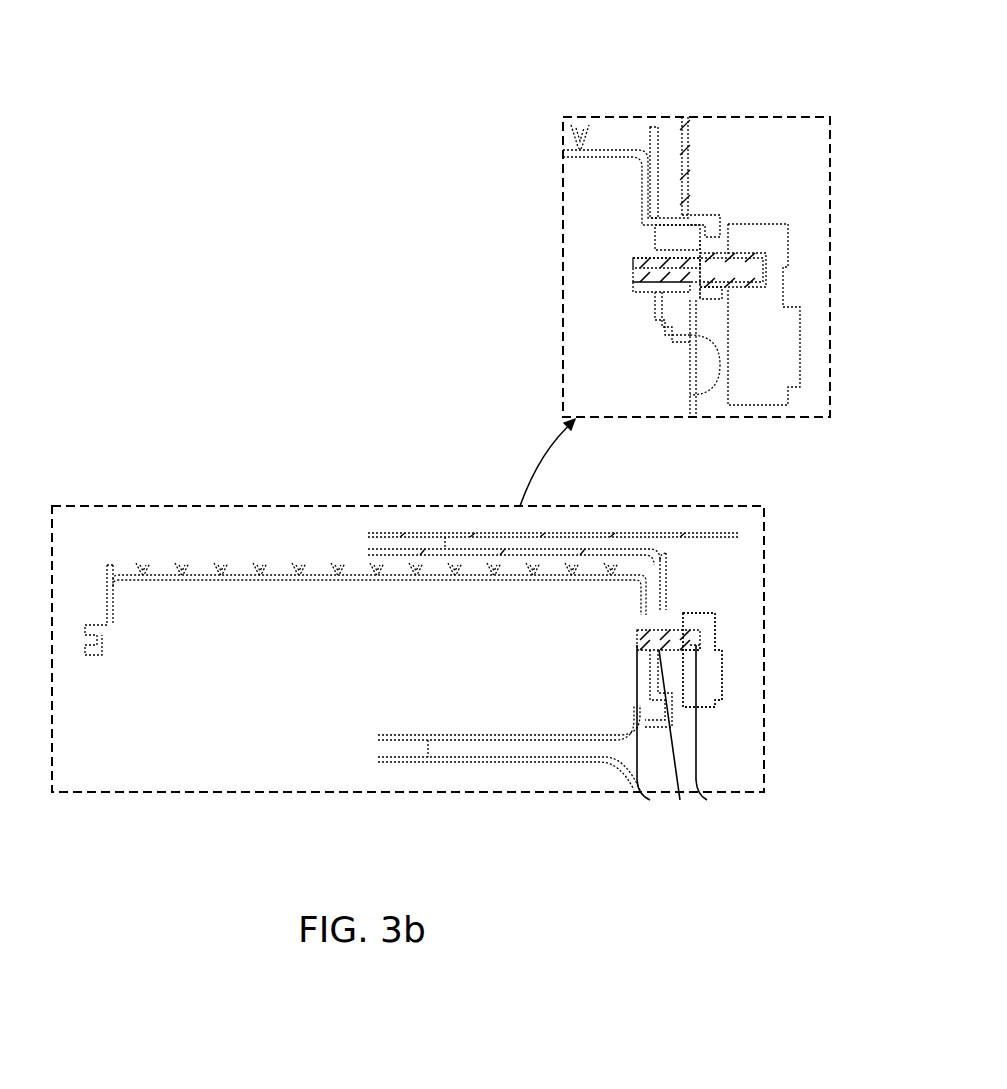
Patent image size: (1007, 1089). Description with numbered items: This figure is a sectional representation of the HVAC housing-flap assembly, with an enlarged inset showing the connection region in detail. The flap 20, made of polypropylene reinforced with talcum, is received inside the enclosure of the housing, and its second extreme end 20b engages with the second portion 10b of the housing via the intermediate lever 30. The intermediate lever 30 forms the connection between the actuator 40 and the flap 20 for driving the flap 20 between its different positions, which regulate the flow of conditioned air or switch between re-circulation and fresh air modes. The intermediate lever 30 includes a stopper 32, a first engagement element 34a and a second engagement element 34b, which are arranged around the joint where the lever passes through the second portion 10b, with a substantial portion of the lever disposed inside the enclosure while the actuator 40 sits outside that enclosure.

The flap 20 is at (615, 148).
The second portion 10b is at (690, 137).
The intermediate lever 30 is at (703, 253).
The first engagement element 34a is at (760, 258).
The second engagement element 34b is at (637, 265).
The second extreme end 20b is at (672, 295).
The actuator 40 is at (755, 395).
The stopper 32 is at (717, 297).